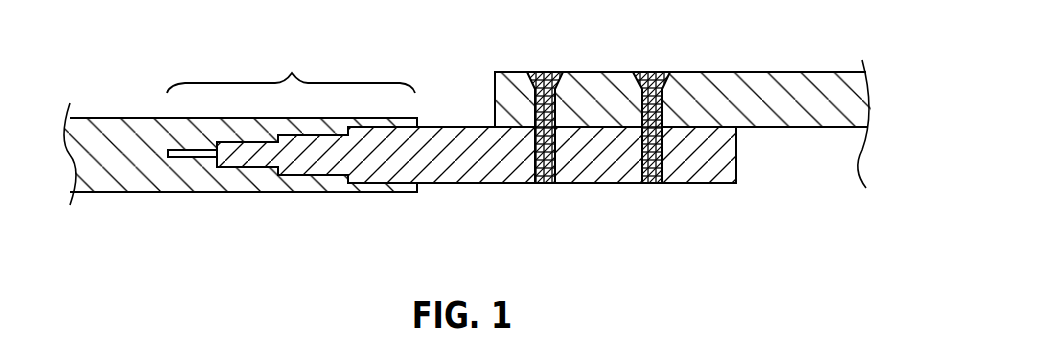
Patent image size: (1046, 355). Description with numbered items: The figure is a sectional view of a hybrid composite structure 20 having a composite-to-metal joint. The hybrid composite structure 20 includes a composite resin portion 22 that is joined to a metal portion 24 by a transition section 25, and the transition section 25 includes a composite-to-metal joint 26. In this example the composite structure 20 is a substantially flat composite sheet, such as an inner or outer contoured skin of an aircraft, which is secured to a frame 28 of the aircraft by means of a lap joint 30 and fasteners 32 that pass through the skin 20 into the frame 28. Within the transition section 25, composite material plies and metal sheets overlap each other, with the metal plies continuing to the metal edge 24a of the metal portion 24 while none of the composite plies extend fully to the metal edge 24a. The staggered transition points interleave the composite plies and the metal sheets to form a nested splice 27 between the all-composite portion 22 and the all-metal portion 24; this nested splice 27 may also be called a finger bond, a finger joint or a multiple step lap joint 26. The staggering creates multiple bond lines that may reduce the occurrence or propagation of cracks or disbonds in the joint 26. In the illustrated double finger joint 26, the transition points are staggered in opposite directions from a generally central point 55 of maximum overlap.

The hybrid composite structure 20 is at (152, 176).
The composite resin portion 22 is at (122, 140).
The metal portion 24 is at (493, 162).
The metal edge 24a is at (725, 199).
The transition section 25 is at (291, 68).
The composite-to-metal joint 26 is at (302, 179).
The nested splice 27 is at (248, 178).
The frame 28 is at (783, 103).
The lap joint 30 is at (683, 128).
The fasteners 32 is at (650, 157).
The central point 55 is at (166, 155).